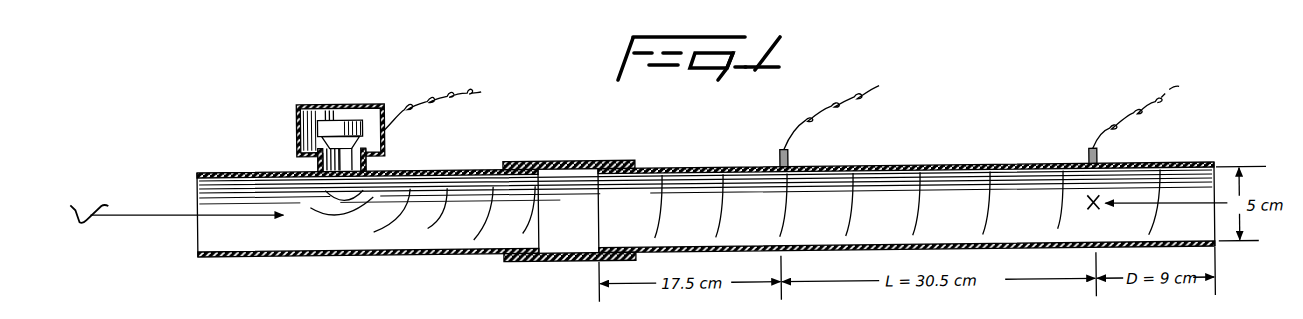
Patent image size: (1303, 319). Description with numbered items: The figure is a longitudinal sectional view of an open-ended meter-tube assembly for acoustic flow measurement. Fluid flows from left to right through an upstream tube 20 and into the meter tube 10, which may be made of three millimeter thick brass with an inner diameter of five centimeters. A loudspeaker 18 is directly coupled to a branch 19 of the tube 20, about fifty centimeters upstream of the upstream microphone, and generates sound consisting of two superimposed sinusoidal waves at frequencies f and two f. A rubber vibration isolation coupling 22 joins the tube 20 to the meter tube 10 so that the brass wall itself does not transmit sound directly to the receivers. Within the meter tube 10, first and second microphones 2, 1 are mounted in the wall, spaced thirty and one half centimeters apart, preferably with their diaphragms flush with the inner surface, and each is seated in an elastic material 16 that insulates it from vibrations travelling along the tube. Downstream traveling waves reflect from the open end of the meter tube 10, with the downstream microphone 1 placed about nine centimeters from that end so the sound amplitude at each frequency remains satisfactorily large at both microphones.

The microphone 1 is at (1086, 168).
The microphone 2 is at (778, 160).
The meter tube 10 is at (1190, 174).
The elastic material 16 is at (791, 174).
The loudspeaker 18 is at (318, 106).
The branch 19 is at (318, 168).
The tube 20 is at (448, 173).
The rubber vibration isolation coupling 22 is at (530, 266).